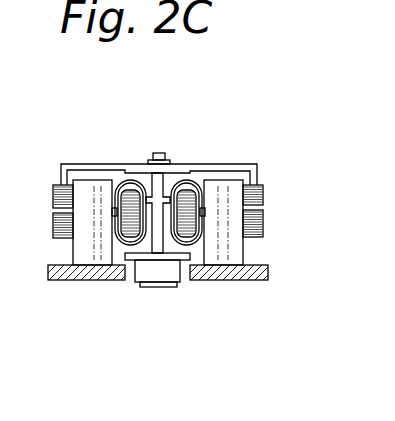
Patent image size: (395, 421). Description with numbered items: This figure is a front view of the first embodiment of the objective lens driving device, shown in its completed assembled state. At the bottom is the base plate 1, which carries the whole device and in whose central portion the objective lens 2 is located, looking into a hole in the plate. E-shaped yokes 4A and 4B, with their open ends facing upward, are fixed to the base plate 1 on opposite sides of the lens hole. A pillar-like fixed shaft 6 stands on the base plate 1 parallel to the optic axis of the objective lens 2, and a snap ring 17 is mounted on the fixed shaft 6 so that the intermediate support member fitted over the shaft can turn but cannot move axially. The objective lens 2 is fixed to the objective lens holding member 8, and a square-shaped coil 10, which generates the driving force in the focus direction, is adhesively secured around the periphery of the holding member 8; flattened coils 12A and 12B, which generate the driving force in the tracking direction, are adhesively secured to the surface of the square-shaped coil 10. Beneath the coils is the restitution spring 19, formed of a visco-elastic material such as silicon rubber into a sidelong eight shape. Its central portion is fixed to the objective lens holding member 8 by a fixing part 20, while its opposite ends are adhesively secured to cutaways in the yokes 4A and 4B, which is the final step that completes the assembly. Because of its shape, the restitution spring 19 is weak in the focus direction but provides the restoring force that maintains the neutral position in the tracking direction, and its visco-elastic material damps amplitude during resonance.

The base plate 1 is at (252, 283).
The objective lens 2 is at (180, 283).
The E-shaped yoke 4A is at (222, 197).
The E-shaped yoke 4B is at (90, 192).
The fixed shaft 6 is at (157, 153).
The objective lens holding member 8 is at (214, 162).
The square-shaped coil 10 is at (265, 210).
The flattened coil 12A is at (265, 192).
The flattened coil 12B is at (53, 190).
The snap ring 17 is at (170, 165).
The restitution spring 19 is at (135, 250).
The fixing part 20 is at (157, 248).